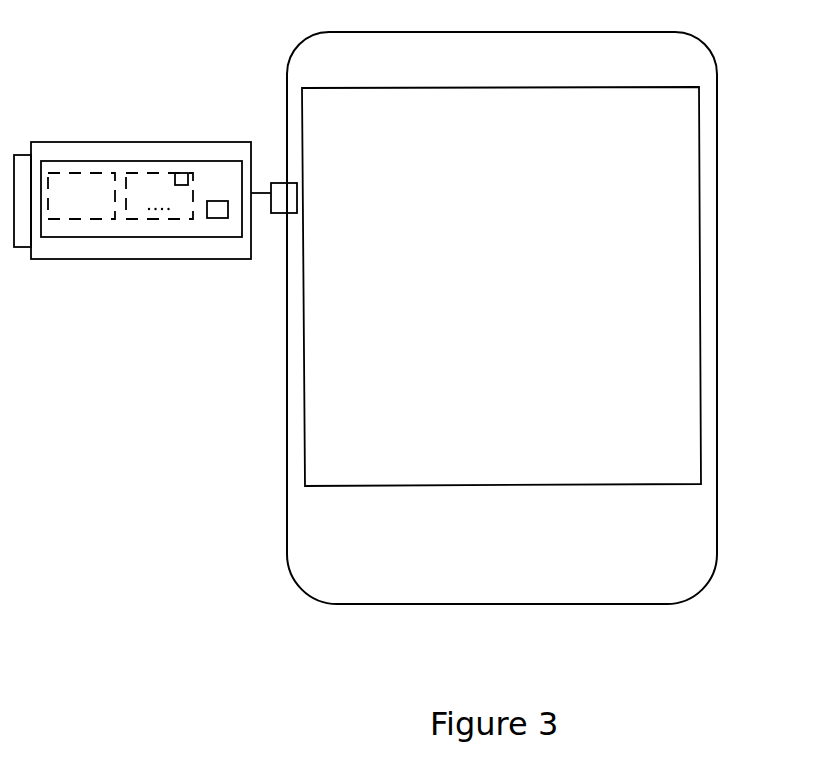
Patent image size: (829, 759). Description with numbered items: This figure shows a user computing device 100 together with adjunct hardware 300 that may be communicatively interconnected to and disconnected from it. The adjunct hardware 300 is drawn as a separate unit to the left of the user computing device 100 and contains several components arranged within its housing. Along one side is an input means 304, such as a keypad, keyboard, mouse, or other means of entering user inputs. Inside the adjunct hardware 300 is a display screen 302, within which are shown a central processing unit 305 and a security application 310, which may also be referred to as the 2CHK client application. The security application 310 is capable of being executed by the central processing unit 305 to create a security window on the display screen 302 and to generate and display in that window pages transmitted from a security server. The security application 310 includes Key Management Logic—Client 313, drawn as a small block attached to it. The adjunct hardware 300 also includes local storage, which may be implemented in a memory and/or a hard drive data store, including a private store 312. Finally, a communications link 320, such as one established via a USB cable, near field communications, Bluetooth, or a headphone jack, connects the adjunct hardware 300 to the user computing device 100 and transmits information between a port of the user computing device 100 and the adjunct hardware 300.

The user computing device 100 is at (715, 62).
The adjunct hardware 300 is at (61, 128).
The display screen 302 is at (98, 161).
The input means 304 is at (23, 247).
The central processing unit 305 is at (77, 219).
The security application 310 is at (153, 219).
The private store 312 is at (215, 219).
The Key Management Logic—Client 313 is at (188, 174).
The communications link 320 is at (259, 196).